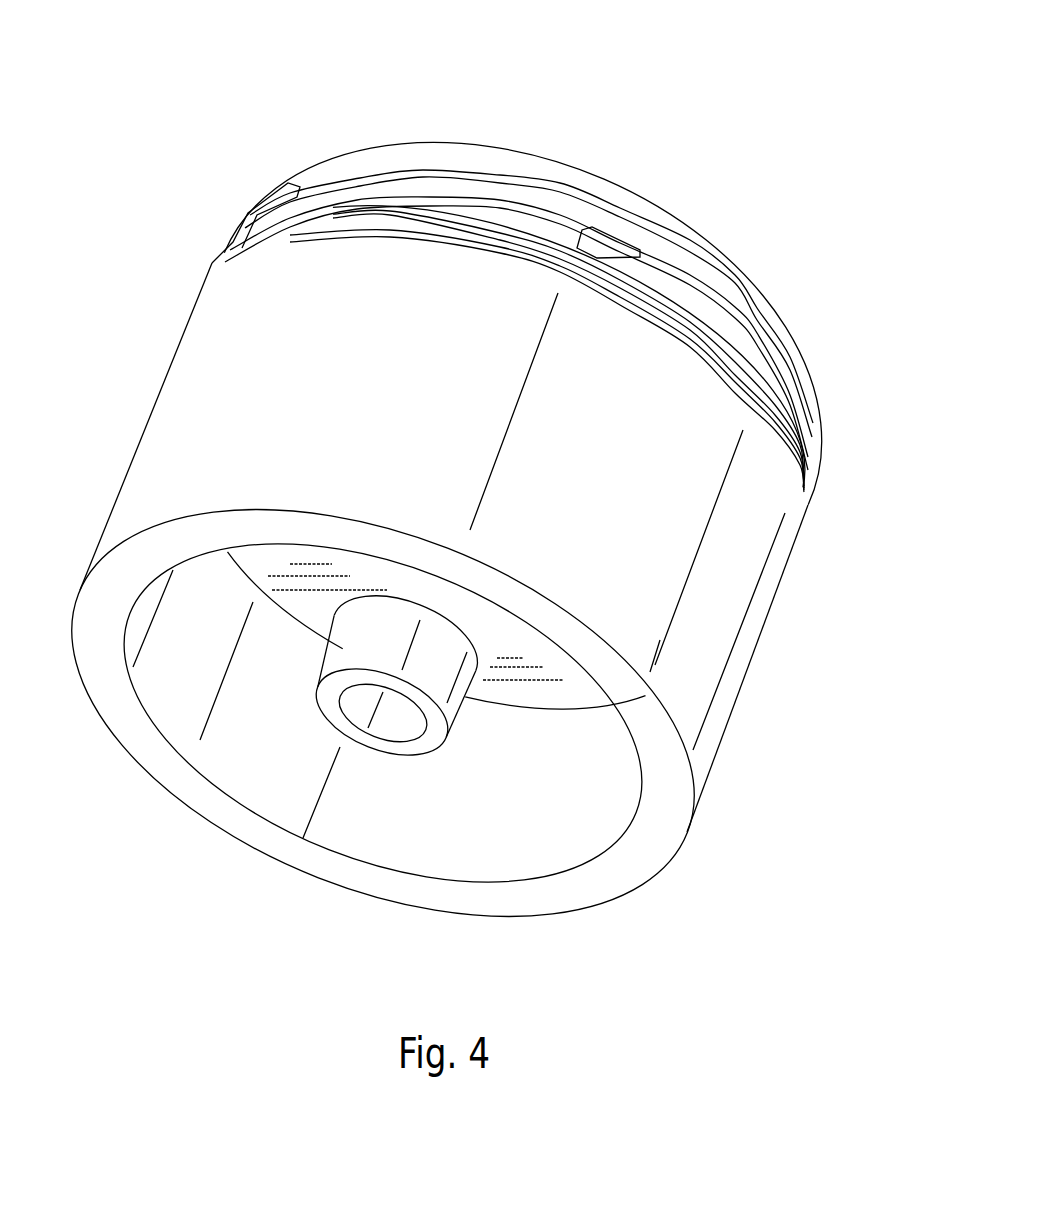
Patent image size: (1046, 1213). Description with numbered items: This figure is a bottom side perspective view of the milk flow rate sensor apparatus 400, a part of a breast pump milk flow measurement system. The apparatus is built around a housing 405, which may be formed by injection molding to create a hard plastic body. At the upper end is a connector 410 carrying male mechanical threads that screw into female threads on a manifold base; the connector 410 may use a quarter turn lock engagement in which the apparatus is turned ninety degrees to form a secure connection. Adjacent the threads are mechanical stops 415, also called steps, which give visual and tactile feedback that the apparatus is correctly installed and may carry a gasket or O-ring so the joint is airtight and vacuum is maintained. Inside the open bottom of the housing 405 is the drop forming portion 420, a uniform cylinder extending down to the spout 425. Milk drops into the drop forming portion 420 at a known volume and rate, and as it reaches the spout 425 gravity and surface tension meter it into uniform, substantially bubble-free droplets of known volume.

The milk flow rate sensor apparatus 400 is at (256, 34).
The housing 405 is at (777, 600).
The connector 410 is at (677, 238).
The mechanical stops 415 is at (806, 487).
The drop forming portion 420 is at (363, 642).
The spout 425 is at (355, 713).